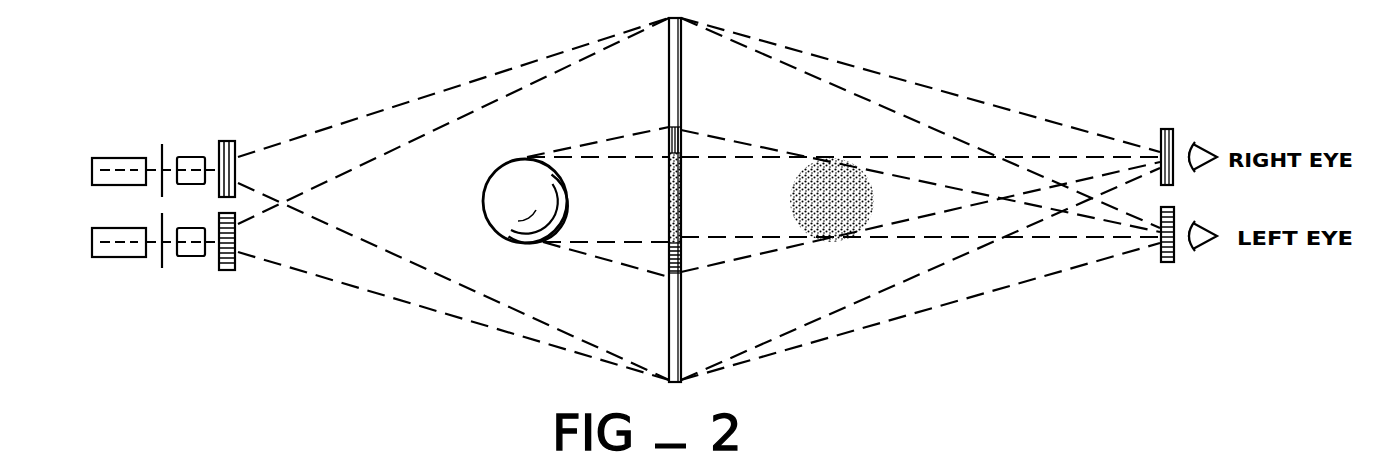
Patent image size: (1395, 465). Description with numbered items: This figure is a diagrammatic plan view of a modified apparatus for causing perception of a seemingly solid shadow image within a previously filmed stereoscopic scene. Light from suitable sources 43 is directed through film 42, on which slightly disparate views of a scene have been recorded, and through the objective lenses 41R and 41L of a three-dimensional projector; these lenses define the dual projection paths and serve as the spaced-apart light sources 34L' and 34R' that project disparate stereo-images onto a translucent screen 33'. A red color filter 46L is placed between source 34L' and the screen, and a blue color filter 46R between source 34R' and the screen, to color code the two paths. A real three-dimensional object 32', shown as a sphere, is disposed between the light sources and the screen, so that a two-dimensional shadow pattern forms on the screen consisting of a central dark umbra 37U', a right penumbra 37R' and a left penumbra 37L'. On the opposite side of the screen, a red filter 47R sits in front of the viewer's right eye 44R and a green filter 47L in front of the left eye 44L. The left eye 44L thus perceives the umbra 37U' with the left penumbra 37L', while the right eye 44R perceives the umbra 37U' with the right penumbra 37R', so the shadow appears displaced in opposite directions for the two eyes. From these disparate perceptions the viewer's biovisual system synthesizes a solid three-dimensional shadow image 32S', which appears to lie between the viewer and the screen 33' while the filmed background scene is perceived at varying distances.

The light sources 43 is at (105, 185).
The film 42 is at (162, 150).
The objective lens 41L is at (182, 157).
The objective lens 41R is at (183, 258).
The color filter 46L is at (231, 142).
The color filter 46R is at (232, 272).
The light source 34L' is at (225, 92).
The light source 34R' is at (238, 323).
The three-dimensional object 32' is at (497, 198).
The screen 33' is at (648, 200).
The left penumbra 37L' is at (626, 124).
The central dark umbra 37U' is at (633, 198).
The right penumbra 37R' is at (638, 285).
The three-dimensional shadow image 32S' is at (796, 200).
The red filter 47R is at (1166, 128).
The green filter 47L is at (1168, 265).
The right eye 44R is at (1197, 148).
The left eye 44L is at (1200, 245).